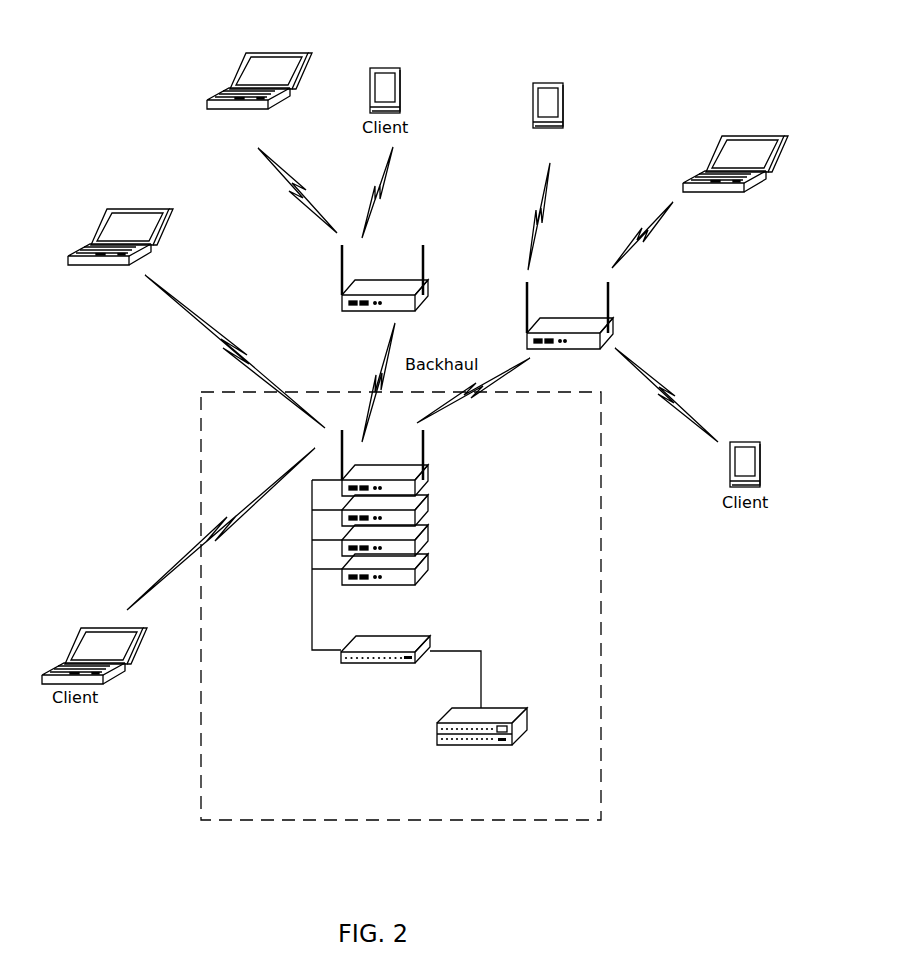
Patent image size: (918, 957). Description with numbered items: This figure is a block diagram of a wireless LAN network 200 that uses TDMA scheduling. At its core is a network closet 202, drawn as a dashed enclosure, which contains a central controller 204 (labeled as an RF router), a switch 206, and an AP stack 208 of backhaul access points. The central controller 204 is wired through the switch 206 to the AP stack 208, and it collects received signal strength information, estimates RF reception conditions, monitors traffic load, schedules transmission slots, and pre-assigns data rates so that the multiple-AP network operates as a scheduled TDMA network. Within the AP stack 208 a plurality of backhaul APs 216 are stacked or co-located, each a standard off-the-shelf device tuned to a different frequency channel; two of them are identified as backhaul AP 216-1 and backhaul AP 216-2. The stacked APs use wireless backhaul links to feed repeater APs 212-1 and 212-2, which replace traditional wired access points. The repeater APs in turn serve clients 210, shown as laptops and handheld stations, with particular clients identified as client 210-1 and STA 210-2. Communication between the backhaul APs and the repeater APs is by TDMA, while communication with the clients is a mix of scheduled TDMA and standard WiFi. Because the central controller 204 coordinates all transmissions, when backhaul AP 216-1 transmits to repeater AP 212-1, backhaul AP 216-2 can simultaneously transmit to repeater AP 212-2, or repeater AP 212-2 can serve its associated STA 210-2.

The wireless LAN network 200 is at (690, 745).
The network closet 202 is at (601, 573).
The central controller 204 is at (527, 713).
The switch 206 is at (430, 636).
The AP stack 208 is at (454, 511).
The client 210 is at (143, 207).
The client 210-1 is at (292, 55).
The STA 210-2 is at (553, 82).
The repeater AP 212-1 is at (426, 284).
The repeater AP 212-2 is at (613, 322).
The backhaul AP 216 is at (428, 467).
The backhaul AP 216-1 is at (428, 561).
The backhaul AP 216-2 is at (428, 531).